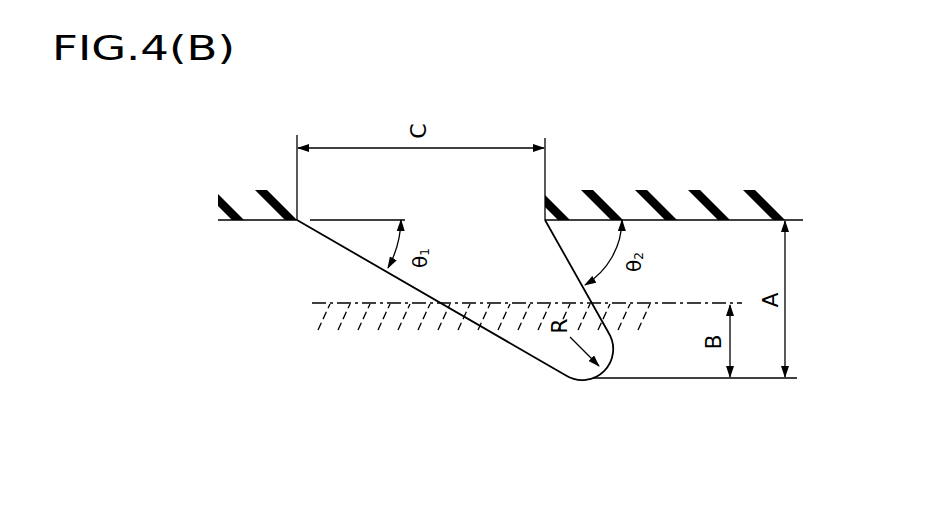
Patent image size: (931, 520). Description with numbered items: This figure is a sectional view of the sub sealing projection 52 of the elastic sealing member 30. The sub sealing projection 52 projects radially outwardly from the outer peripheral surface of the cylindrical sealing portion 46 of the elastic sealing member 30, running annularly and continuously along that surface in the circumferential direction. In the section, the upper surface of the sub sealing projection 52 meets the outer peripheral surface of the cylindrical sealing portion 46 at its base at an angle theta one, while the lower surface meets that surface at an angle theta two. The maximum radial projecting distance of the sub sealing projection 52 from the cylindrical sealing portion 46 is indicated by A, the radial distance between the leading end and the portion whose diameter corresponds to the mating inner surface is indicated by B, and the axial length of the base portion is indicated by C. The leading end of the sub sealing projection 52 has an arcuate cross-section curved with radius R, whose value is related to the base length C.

The elastic sealing member 30 is at (282, 329).
The cylindrical sealing portion 46 is at (258, 208).
The sub sealing projection 52 is at (540, 350).